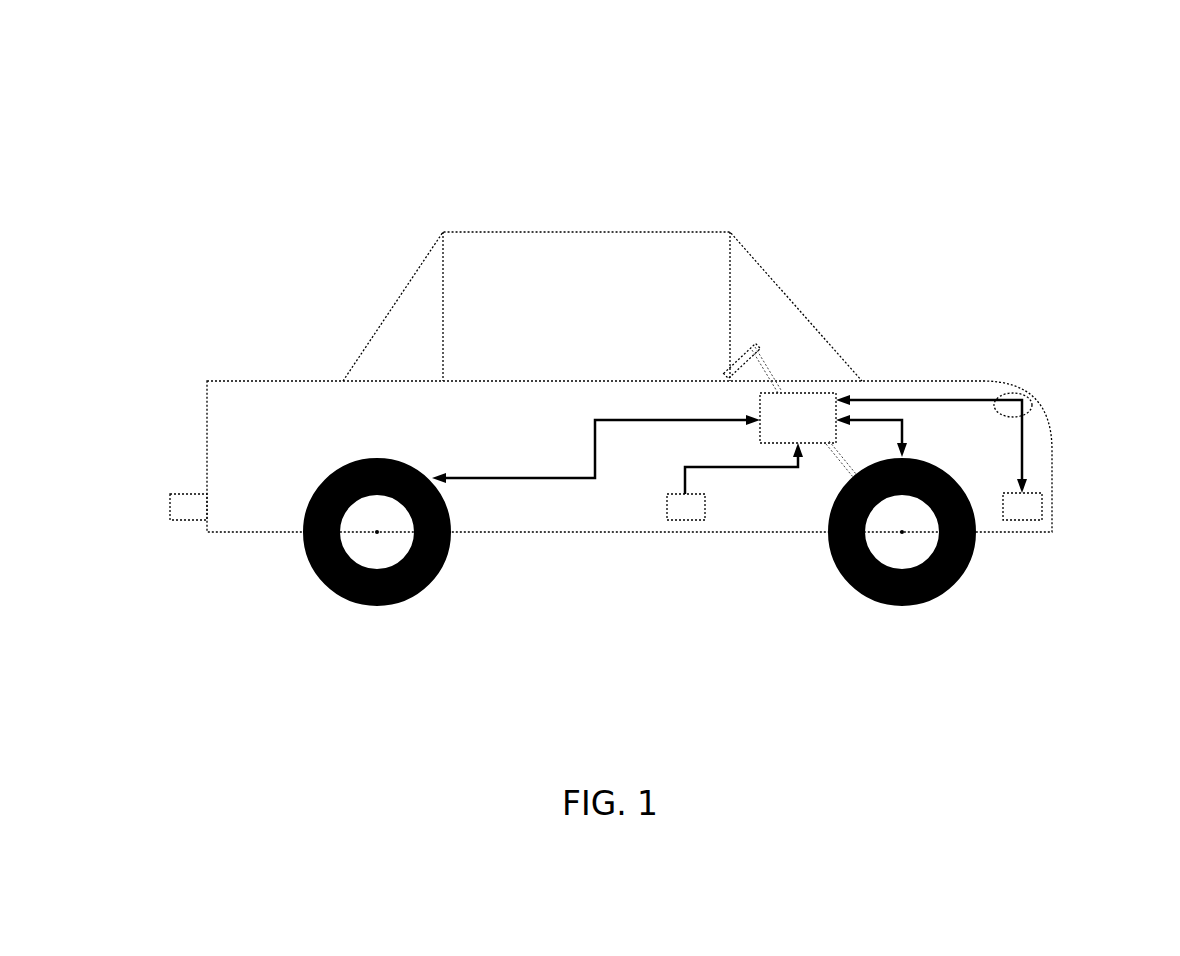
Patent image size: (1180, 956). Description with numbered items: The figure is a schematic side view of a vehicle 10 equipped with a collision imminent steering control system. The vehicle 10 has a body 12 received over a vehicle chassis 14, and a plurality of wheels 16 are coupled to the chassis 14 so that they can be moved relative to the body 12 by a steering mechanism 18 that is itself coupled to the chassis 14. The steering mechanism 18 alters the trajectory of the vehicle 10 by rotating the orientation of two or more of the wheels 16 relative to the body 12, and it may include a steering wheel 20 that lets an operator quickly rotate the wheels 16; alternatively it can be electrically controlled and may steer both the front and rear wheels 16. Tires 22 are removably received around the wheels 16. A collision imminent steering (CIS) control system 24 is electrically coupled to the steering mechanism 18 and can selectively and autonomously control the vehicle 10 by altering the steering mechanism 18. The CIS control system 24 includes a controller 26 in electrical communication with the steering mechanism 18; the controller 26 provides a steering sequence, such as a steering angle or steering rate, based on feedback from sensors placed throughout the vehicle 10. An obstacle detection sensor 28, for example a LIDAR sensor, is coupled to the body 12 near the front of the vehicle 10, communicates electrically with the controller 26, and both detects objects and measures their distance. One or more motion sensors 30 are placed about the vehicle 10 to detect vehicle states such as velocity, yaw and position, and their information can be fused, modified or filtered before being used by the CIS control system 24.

The vehicle 10 is at (761, 112).
The body 12 is at (275, 381).
The vehicle chassis 14 is at (518, 532).
The wheels 16 is at (342, 598).
The steering mechanism 18 is at (835, 457).
The steering wheel 20 is at (757, 347).
The tires 22 is at (377, 532).
The collision imminent steering (CIS) control system 24 is at (822, 378).
The controller 26 is at (760, 400).
The obstacle detection sensor 28 is at (1042, 507).
The motion sensors 30 is at (688, 520).